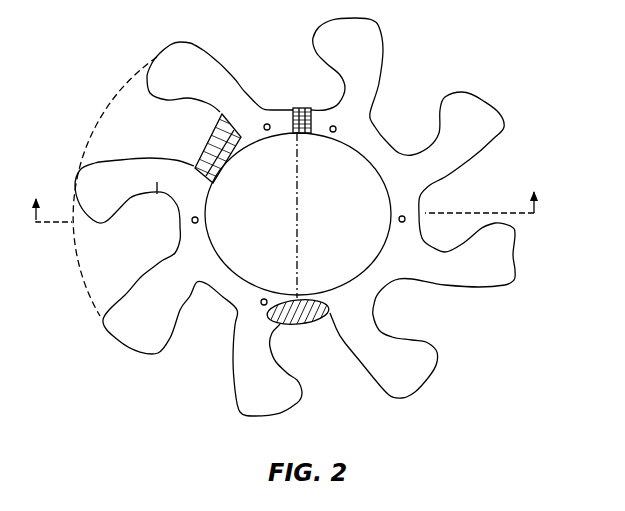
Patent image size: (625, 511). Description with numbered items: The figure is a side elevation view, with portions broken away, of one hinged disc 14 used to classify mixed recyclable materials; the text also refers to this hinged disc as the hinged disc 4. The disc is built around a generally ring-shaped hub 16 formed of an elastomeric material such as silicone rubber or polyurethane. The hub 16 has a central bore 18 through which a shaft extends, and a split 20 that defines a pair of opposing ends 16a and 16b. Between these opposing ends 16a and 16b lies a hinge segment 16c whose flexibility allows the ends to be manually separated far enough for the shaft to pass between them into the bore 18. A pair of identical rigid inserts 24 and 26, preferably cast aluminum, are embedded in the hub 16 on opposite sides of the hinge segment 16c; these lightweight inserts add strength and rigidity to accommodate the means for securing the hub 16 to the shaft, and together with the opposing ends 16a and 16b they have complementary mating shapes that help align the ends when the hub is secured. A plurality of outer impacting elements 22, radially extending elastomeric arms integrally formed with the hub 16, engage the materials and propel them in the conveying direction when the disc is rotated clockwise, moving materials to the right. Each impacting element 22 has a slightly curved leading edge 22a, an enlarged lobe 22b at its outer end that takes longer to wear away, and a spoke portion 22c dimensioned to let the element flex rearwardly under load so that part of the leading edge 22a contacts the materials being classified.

The hinged disc 14 is at (485, 99).
The hub 16 is at (370, 261).
The opposing end 16a is at (272, 109).
The opposing end 16b is at (306, 108).
The hinge segment 16c is at (291, 328).
The bore 18 is at (345, 200).
The split 20 is at (293, 108).
The outer impacting element 22 is at (528, 257).
The leading edge 22a is at (203, 50).
The enlarged lobe 22b is at (166, 57).
The spoke portion 22c is at (80, 267).
The rigid insert 24 is at (219, 131).
The rigid insert 26 is at (330, 312).
The hinged disc 4 is at (284, 196).